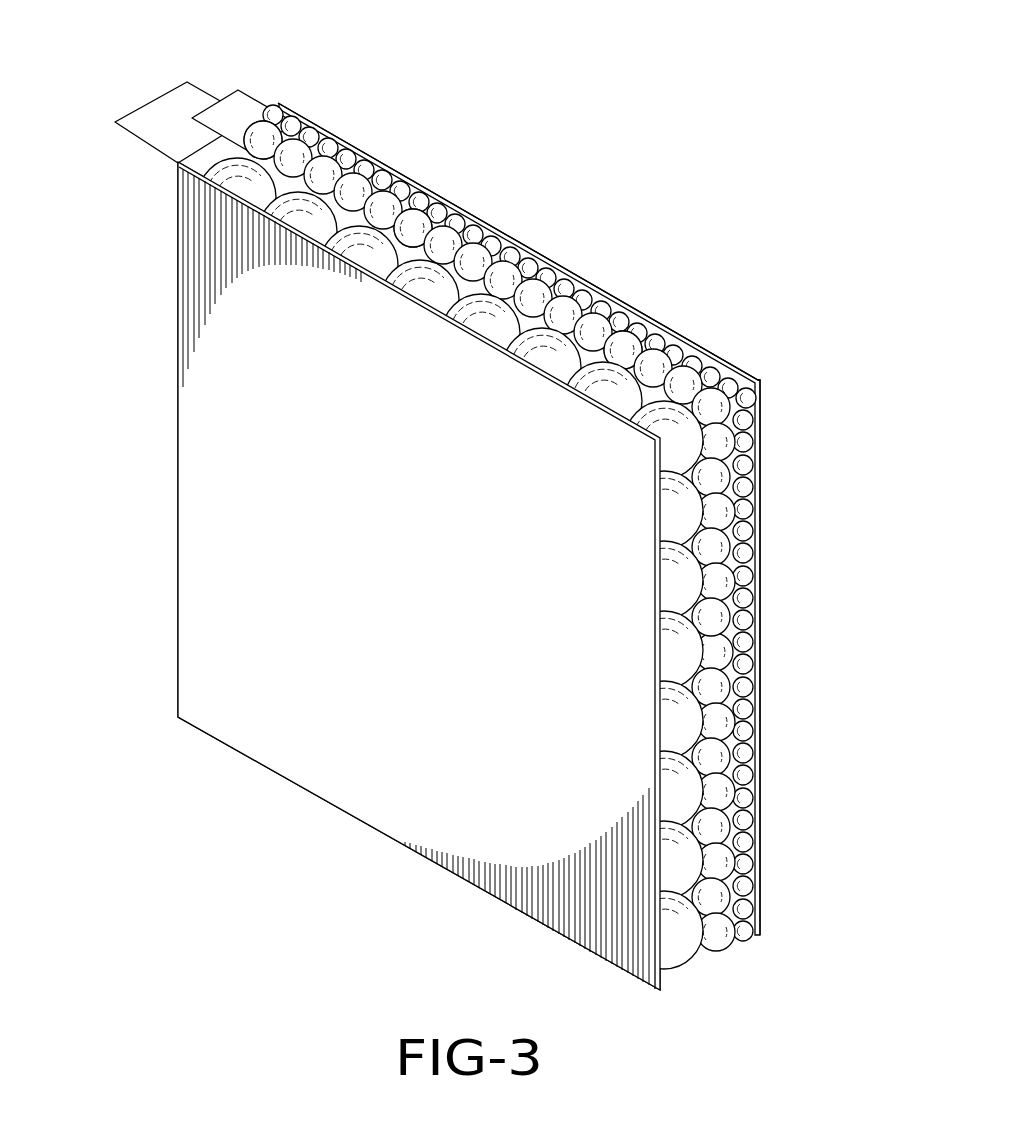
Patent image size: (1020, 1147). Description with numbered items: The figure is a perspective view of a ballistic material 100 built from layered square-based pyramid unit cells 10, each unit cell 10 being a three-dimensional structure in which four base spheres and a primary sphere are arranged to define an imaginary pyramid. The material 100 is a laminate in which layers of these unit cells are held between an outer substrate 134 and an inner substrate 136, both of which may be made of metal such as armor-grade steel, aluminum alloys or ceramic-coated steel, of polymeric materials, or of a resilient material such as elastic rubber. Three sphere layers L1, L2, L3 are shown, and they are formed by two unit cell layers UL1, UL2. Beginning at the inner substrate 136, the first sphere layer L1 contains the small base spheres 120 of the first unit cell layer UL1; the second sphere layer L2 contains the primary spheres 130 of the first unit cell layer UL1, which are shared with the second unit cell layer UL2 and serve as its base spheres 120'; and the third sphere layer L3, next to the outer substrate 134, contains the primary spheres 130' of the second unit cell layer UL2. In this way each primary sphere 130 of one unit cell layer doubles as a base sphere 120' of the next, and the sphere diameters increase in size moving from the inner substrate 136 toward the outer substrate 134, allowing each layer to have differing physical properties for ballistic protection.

The ballistic material 100 is at (676, 128).
The square-based pyramid unit cell sphere structure 10 is at (750, 586).
The base spheres 120 is at (509, 243).
The base spheres 120' is at (443, 245).
The primary spheres 130 is at (477, 262).
The primary spheres 130' is at (420, 315).
The outer substrate 134 is at (207, 658).
The inner substrate 136 is at (760, 447).
The first sphere layer L1 is at (743, 927).
The second sphere layer L2 is at (715, 923).
The third sphere layer L3 is at (675, 927).
The first unit cell layer UL1 is at (210, 104).
The second unit cell layer UL2 is at (148, 103).